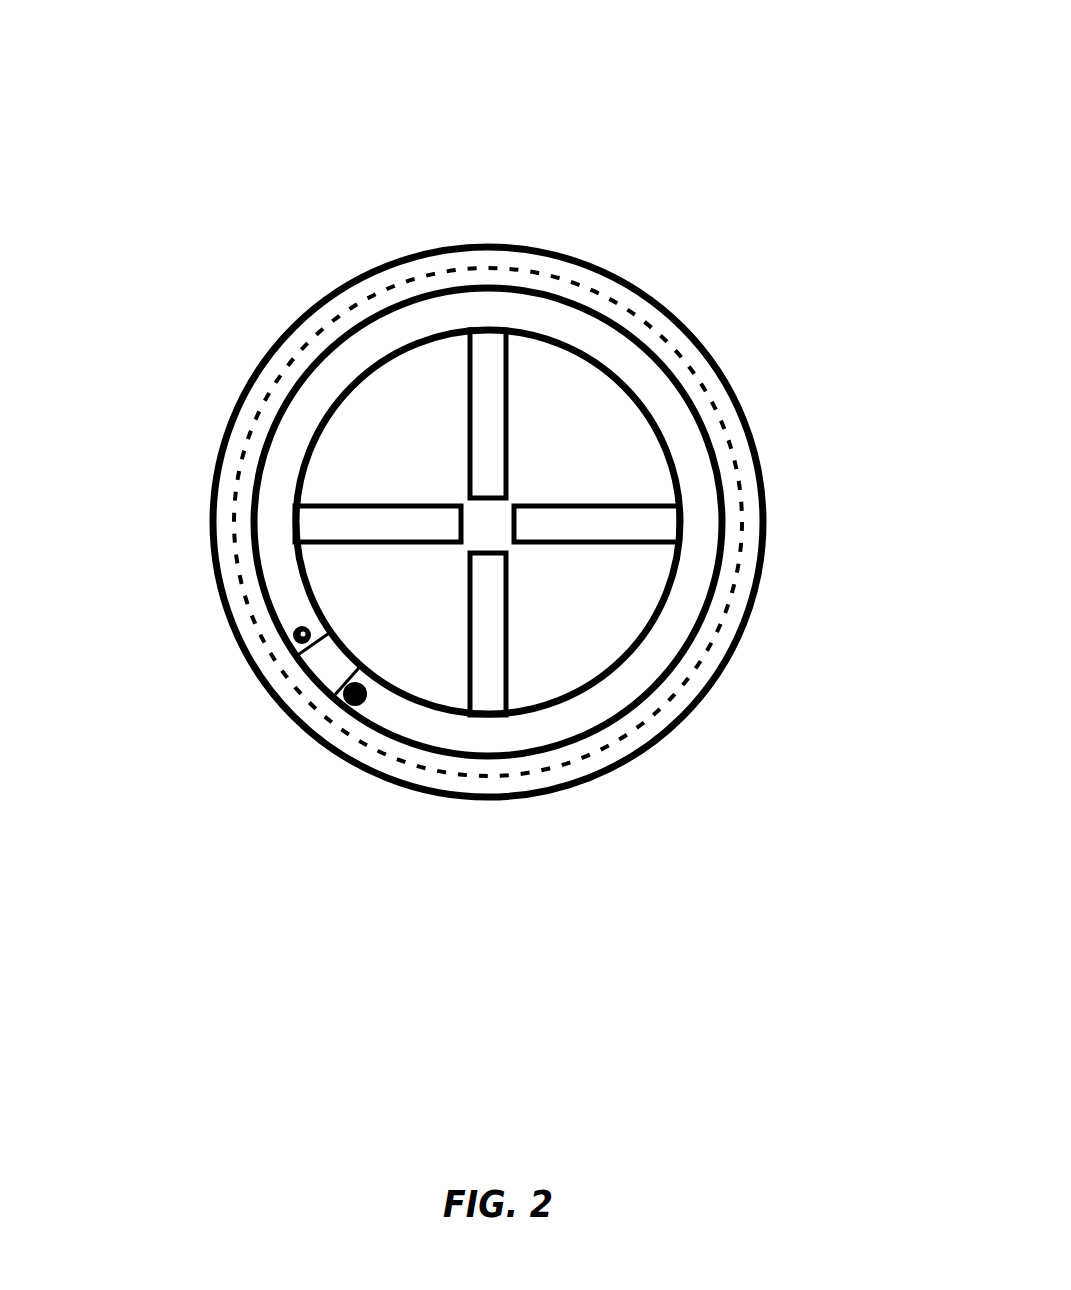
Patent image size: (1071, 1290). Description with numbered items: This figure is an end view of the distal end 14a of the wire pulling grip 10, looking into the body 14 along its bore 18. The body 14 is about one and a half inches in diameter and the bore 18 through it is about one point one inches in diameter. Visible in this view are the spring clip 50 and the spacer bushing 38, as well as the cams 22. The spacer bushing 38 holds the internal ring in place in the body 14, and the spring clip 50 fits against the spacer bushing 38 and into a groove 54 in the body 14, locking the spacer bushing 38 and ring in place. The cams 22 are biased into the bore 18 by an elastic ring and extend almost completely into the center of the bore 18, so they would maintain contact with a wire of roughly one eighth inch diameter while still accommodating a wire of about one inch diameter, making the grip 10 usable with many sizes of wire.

The wire pulling grip 10 is at (792, 102).
The body 14 is at (767, 560).
The distal end 14a is at (748, 500).
The bore 18 is at (358, 583).
The cams 22 is at (510, 413).
The spacer bushing 38 is at (323, 662).
The spring clip 50 is at (683, 605).
The groove 54 is at (718, 432).